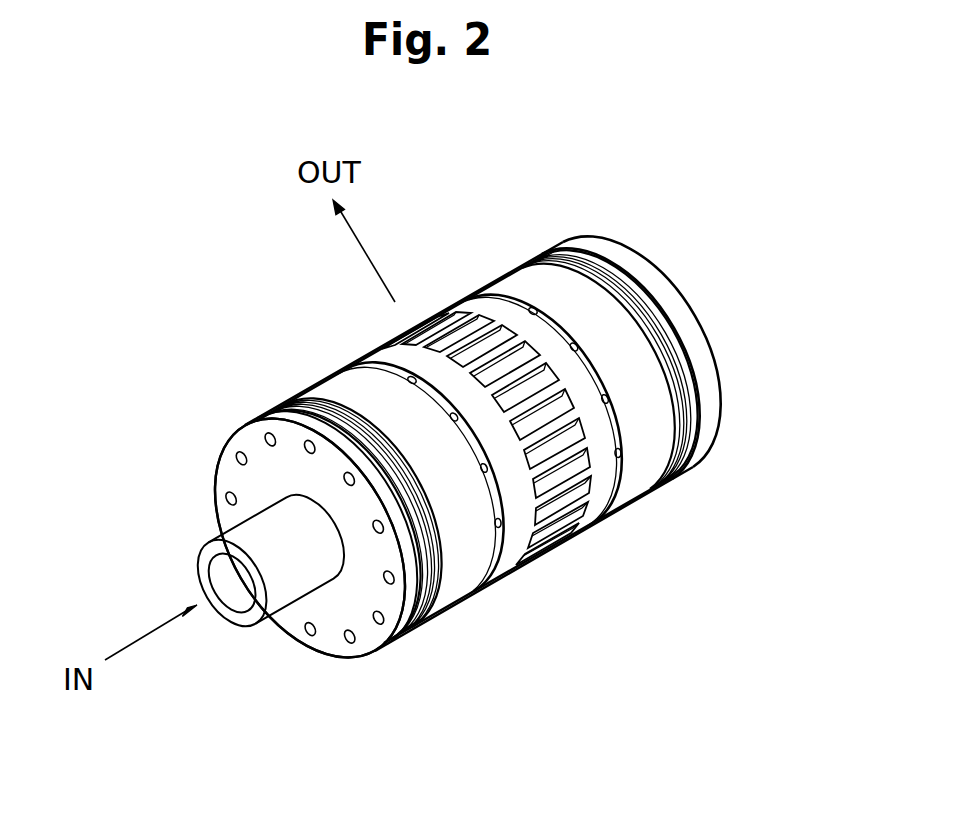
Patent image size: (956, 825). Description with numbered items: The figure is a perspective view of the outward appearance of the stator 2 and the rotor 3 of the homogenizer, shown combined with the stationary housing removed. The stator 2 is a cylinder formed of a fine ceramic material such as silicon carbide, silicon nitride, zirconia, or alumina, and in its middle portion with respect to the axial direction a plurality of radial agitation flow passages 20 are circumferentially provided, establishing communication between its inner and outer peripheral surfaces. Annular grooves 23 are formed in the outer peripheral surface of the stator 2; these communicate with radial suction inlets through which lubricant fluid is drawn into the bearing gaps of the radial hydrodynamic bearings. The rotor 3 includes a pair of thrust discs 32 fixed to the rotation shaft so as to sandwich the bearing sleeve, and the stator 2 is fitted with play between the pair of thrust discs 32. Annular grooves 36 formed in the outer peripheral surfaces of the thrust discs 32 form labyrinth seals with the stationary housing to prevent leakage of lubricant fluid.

The stator 2 is at (664, 511).
The rotor 3 is at (180, 480).
The radial agitation flow passages 20 is at (514, 336).
The annular grooves 23 is at (532, 308).
The thrust discs 32 is at (708, 392).
The annular grooves 36 is at (668, 323).